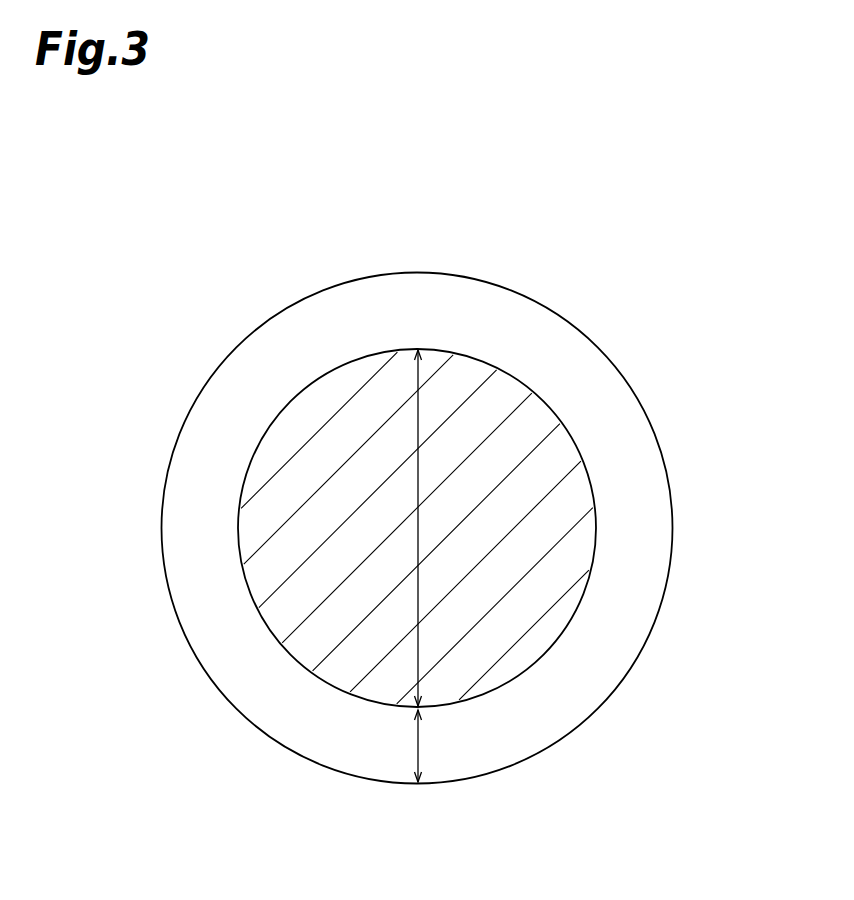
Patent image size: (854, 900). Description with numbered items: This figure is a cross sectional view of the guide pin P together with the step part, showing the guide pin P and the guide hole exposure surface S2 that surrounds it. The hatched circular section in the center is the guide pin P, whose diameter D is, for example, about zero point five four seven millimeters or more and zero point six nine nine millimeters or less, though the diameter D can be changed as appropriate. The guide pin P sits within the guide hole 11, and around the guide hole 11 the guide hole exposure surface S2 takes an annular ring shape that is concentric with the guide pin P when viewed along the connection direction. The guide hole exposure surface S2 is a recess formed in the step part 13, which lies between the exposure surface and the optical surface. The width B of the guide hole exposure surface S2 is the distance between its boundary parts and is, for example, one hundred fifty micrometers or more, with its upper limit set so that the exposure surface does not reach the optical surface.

The guide hole 11 is at (577, 448).
The step part 13 is at (670, 613).
The guide pin P is at (500, 397).
The guide hole exposure surface S2 is at (461, 538).
The diameter D is at (429, 528).
The width B is at (428, 746).